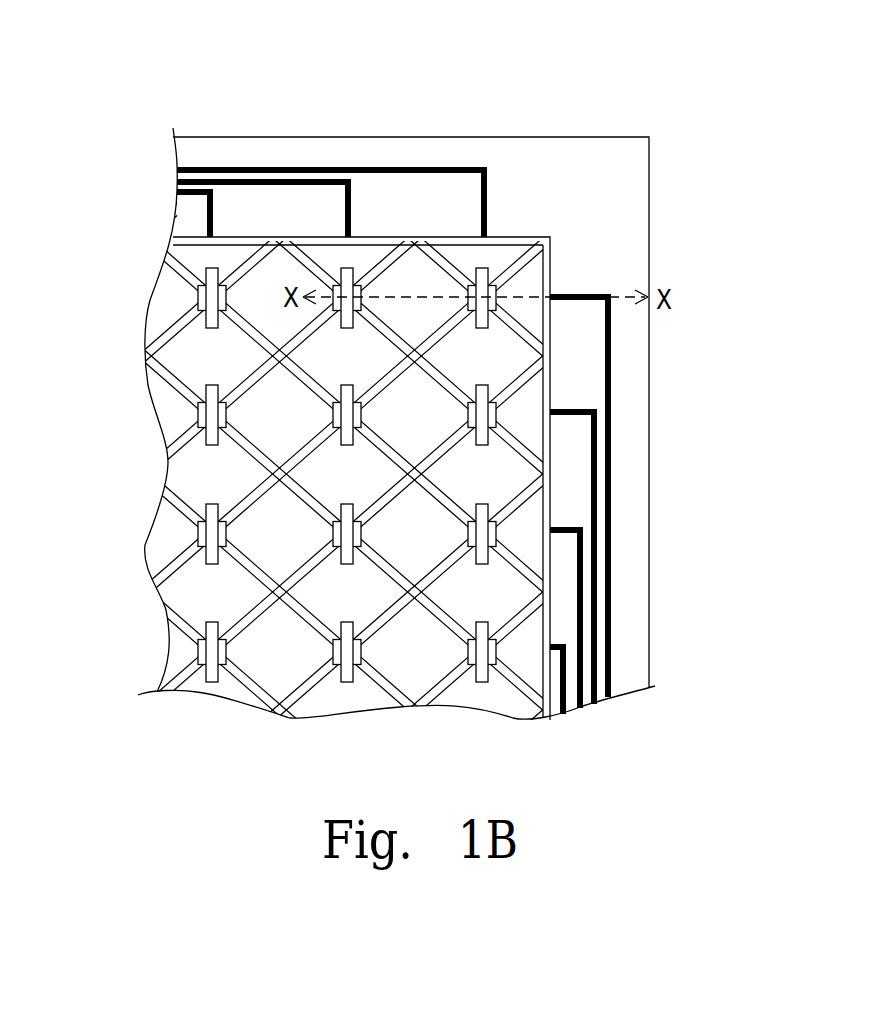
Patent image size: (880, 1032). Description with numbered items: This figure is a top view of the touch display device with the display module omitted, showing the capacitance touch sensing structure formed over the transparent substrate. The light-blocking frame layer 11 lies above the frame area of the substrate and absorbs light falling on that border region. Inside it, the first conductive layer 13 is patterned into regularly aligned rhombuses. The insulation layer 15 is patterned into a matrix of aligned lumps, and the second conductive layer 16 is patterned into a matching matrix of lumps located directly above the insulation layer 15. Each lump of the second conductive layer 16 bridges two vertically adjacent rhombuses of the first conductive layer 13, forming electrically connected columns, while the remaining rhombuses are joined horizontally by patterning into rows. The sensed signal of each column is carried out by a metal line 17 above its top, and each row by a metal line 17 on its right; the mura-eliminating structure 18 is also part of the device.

The light-blocking frame layer 11 is at (616, 180).
The first conductive layer 13 is at (173, 302).
The insulation layer 15 is at (196, 417).
The second conductive layer 16 is at (200, 560).
The metal line 17 is at (388, 168).
The mura-eliminating structure 18 is at (548, 670).